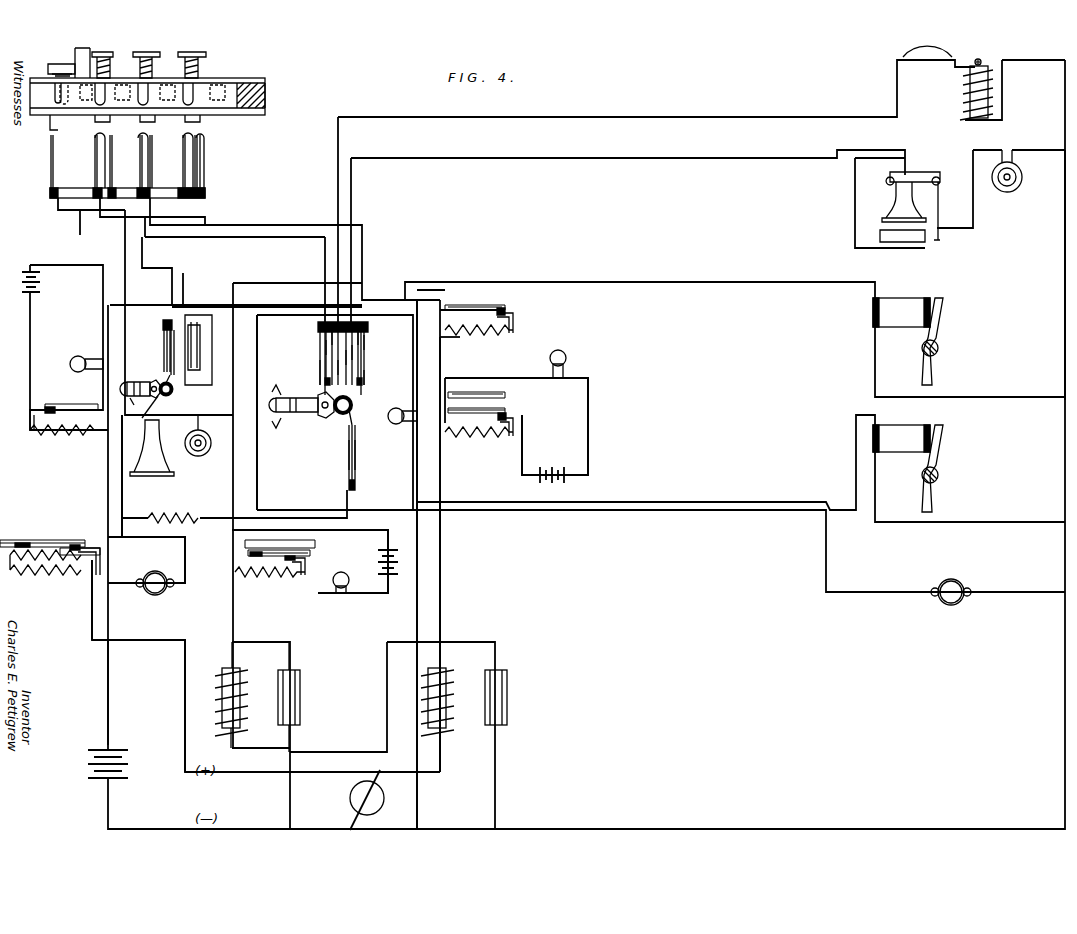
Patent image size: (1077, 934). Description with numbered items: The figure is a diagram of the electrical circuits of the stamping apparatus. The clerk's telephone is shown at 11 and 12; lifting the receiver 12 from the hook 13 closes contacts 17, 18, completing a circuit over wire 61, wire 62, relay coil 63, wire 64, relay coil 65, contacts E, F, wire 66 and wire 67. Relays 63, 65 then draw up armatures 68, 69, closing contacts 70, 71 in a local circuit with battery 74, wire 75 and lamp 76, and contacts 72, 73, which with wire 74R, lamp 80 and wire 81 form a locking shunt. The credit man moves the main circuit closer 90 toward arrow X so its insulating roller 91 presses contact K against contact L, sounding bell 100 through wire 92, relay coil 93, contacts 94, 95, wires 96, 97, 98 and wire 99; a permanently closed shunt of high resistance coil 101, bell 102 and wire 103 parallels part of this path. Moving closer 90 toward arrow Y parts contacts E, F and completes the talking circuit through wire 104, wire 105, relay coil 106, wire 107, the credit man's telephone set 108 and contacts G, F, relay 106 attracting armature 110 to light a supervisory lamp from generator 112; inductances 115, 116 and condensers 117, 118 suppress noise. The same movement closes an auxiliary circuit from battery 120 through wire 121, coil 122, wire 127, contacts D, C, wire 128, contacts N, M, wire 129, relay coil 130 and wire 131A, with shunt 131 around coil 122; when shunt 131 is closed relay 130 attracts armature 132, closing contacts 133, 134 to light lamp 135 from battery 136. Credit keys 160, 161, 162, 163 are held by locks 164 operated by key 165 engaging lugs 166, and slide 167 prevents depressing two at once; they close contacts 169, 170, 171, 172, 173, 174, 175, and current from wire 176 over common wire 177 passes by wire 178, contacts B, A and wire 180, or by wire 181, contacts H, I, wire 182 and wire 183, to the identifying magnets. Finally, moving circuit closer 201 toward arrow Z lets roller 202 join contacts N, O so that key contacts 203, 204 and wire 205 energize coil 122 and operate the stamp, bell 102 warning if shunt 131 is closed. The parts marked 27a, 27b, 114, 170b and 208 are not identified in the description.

The key 160 is at (48, 66).
The key 165 is at (75, 55).
The key 161 is at (112, 65).
The key 162 is at (155, 65).
The key 163 is at (206, 54).
The plate 167 is at (232, 110).
The lock 164 is at (60, 102).
The lugs 166 is at (82, 118).
The contact 169 is at (120, 112).
The contact 171 is at (170, 112).
The contact 173 is at (210, 112).
The contact 170 is at (118, 152).
The contact 172 is at (165, 140).
The contact 175 is at (204, 152).
The contact 174 is at (206, 158).
The contacts 204 is at (60, 160).
The contacts 203 is at (50, 192).
The wire 205 is at (58, 218).
The common wire 177 is at (91, 221).
The wire 178 is at (178, 225).
The wire 181 is at (275, 200).
The conductor 208 is at (152, 270).
The wire 66 is at (362, 225).
The wire 127 is at (512, 117).
The shunt 131 is at (905, 56).
The coil 122 is at (966, 90).
The wire 121 is at (1044, 60).
The hook 13 is at (922, 174).
The receiver 12 is at (890, 204).
The clerk's telephone 11 is at (1010, 192).
The contact 17 is at (902, 233).
The contact 18 is at (905, 248).
The wire 67 is at (1063, 299).
The wire 182 is at (598, 282).
The relay 27b is at (900, 298).
The relay 27a is at (900, 425).
The wire 183 is at (983, 397).
The wire 180 is at (980, 522).
The bell 100 is at (956, 590).
The wire 99 is at (628, 502).
The contact 73 is at (505, 305).
The contact 72 is at (506, 312).
The armature 69 is at (513, 326).
The relay coil 65 is at (486, 335).
The wire 64 is at (442, 362).
The wire 74R is at (417, 378).
The wire 75 is at (590, 422).
The lamp 76 is at (566, 360).
The contact 71 is at (508, 400).
The contact 70 is at (508, 412).
The armature 68 is at (514, 426).
The relay coil 63 is at (480, 437).
The battery 74 is at (558, 465).
The main circuit closer 90 is at (336, 415).
The insulating roller 91 is at (352, 408).
The lamp 80 is at (398, 410).
The casing 170b is at (258, 470).
The contact A is at (320, 378).
The contact B is at (326, 348).
The contact C is at (332, 338).
The contact D is at (338, 368).
The switch contact E is at (346, 357).
The contact F is at (352, 352).
The contact G is at (358, 338).
The contact H is at (364, 343).
The contact I is at (366, 376).
The arrow X is at (283, 387).
The arrow Y is at (283, 423).
The contact K is at (349, 454).
The contact L is at (355, 454).
The wire 129 is at (110, 345).
The wire 128 is at (290, 307).
The contact M is at (163, 345).
The contact N is at (171, 358).
The contact O is at (175, 377).
The insulating roller 202 is at (172, 392).
The circuit closer 201 is at (139, 408).
The arrow Z is at (137, 406).
The credit man's telephone set 108 is at (160, 448).
The wire 107 is at (233, 478).
The battery 136 is at (28, 300).
The lamp 135 is at (78, 372).
The contact 134 is at (48, 404).
The contact 133 is at (40, 408).
The armature 132 is at (30, 430).
The relay coil 130 is at (62, 437).
The wire 176 is at (124, 495).
The wire 97 is at (122, 522).
The wire 103 is at (186, 544).
The bell 102 is at (165, 590).
The high resistance coil 101 is at (100, 552).
The contact 94 is at (48, 540).
The contact 95 is at (72, 544).
The wire 96 is at (98, 546).
The relay coil 93 is at (62, 575).
The wire 92 is at (168, 640).
The wire 131A is at (108, 690).
The low voltage battery 120 is at (118, 748).
The wire 98 is at (286, 510).
The wire 105 is at (236, 612).
The armature 110 is at (306, 568).
The relay coil 106 is at (282, 580).
The generator 112 is at (380, 552).
The lamp 114 is at (348, 574).
The wire 81 is at (415, 606).
The wire 62 is at (441, 566).
The wire 104 is at (390, 642).
The inductance 116 is at (242, 670).
The condenser 118 is at (302, 700).
The inductance 115 is at (448, 670).
The condenser 117 is at (511, 694).
The wire 61 is at (441, 764).